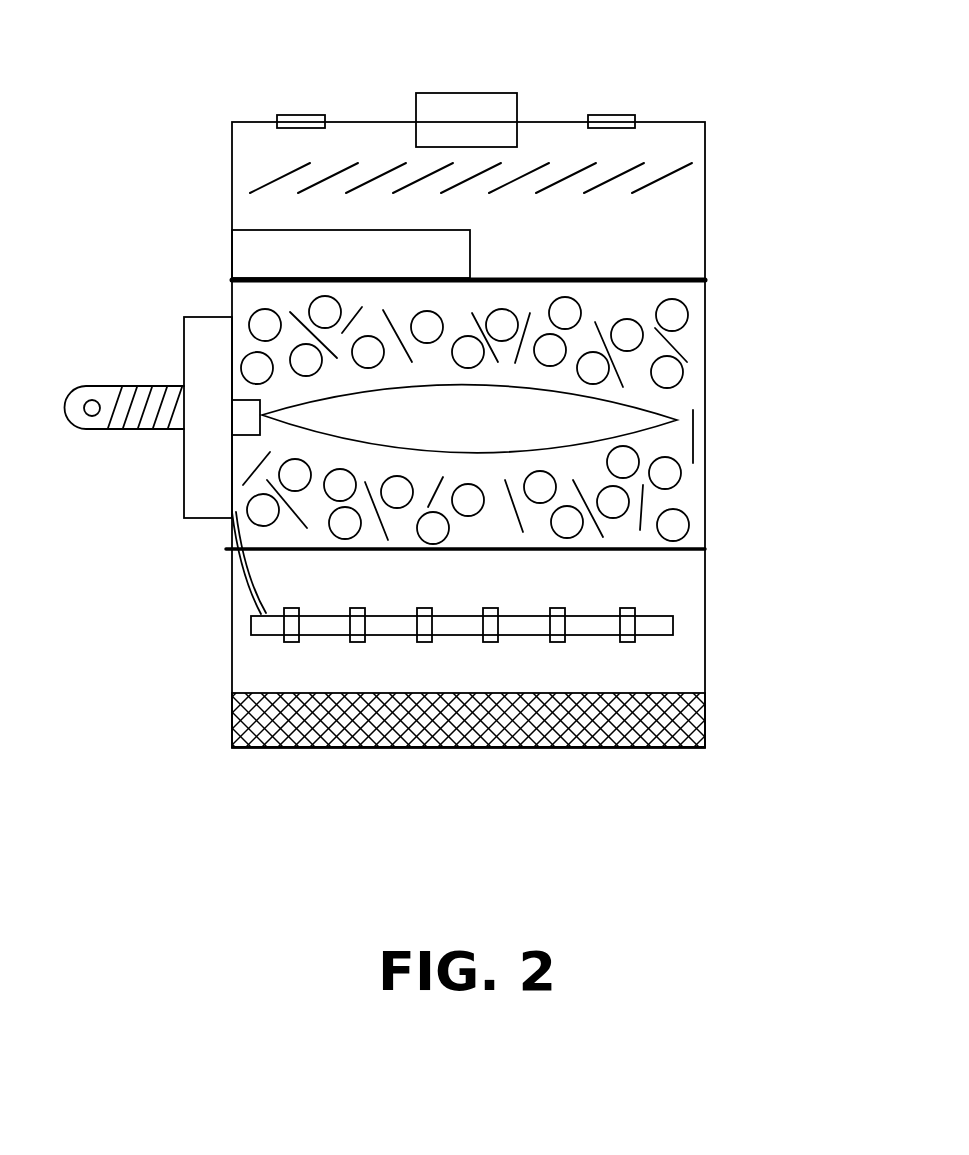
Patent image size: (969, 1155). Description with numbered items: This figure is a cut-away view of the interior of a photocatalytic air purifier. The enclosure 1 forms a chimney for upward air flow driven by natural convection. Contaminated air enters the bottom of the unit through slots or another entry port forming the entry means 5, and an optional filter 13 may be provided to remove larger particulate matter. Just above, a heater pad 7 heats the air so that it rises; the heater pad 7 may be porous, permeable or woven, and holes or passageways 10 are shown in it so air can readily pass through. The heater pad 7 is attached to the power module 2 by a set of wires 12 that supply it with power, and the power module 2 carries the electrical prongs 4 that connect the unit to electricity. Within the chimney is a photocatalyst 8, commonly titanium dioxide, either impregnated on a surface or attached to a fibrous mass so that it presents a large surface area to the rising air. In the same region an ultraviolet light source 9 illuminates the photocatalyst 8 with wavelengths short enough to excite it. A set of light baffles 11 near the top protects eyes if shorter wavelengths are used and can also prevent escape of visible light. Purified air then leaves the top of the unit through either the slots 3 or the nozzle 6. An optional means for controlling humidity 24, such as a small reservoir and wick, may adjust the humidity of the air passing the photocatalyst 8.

The enclosure 1 is at (718, 242).
The power module 2 is at (208, 307).
The slots 3 is at (610, 110).
The electrical prongs 4 is at (100, 390).
The entry means 5 is at (458, 772).
The nozzle 6 is at (465, 90).
The heater pad 7 is at (330, 628).
The photocatalyst 8 is at (657, 505).
The ultraviolet light source 9 is at (548, 412).
The holes or passageways 10 is at (630, 647).
The light baffles 11 is at (658, 182).
The wires 12 is at (238, 590).
The filter 13 is at (650, 742).
The means for controlling humidity 24 is at (247, 235).